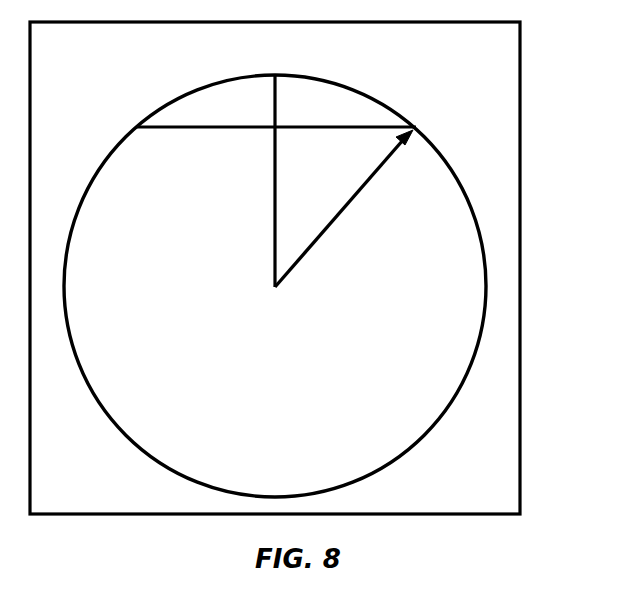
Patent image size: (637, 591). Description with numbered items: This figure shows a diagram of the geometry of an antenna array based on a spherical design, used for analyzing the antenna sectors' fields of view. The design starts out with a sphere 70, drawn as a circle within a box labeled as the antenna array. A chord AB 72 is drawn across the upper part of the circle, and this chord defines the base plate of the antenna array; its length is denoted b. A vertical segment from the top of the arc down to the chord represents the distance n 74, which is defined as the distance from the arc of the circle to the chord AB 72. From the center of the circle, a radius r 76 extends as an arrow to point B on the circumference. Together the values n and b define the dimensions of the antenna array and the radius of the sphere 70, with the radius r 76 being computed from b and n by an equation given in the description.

The sphere 70 is at (486, 292).
The chord AB 72 is at (372, 132).
The distance n 74 is at (273, 108).
The radius r 76 is at (308, 252).